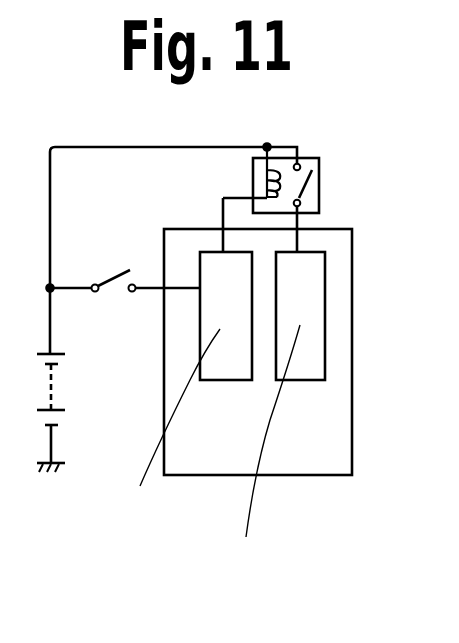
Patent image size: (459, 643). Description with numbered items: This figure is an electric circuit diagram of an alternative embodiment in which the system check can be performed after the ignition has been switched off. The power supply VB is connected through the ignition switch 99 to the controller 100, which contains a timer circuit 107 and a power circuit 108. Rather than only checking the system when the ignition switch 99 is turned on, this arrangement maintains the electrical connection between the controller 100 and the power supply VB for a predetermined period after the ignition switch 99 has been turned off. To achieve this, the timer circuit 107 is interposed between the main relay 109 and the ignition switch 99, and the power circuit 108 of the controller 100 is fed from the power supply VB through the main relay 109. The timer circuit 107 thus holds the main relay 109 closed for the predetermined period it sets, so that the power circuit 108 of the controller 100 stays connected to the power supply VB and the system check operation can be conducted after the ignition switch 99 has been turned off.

The ignition switch 99 is at (101, 280).
The power supply VB is at (62, 358).
The controller 100 is at (300, 476).
The timer circuit 107 is at (228, 382).
The power circuit 108 is at (298, 382).
The main relay 109 is at (319, 190).